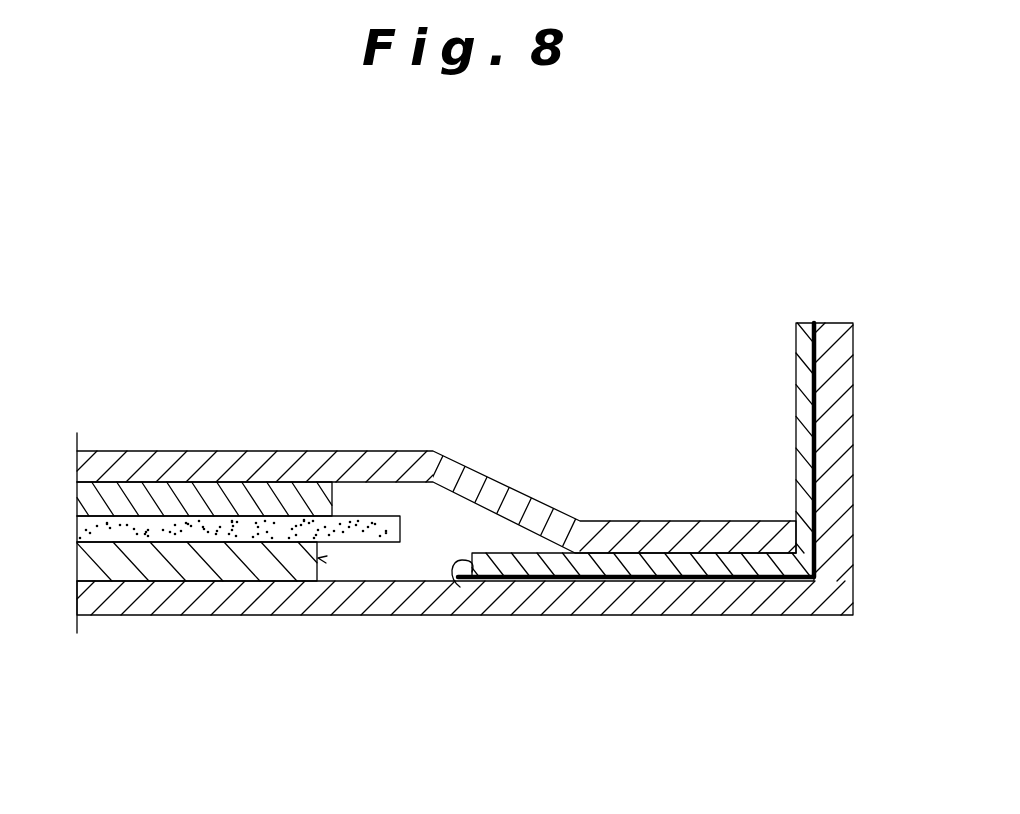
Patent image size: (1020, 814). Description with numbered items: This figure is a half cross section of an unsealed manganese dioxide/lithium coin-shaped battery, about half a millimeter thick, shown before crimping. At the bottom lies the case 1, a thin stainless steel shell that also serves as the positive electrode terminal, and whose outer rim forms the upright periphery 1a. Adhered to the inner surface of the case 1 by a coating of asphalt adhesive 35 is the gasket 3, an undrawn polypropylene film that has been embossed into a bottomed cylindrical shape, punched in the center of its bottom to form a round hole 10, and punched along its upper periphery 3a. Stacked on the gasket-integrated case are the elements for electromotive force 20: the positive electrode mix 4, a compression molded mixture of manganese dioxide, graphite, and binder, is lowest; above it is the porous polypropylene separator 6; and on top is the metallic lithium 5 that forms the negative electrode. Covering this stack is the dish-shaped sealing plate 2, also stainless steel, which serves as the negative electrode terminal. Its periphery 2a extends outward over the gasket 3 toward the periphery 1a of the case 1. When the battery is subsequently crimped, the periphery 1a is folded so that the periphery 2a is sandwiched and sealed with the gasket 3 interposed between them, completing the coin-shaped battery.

The case 1 is at (205, 607).
The periphery of the case 1a is at (830, 377).
The sealing plate 2 is at (393, 468).
The periphery of the sealing plate 2a is at (723, 538).
The gasket 3 is at (760, 567).
The upper periphery of the gasket 3a is at (802, 340).
The positive electrode mix 4 is at (273, 570).
The metallic lithium 5 is at (245, 487).
The separator 6 is at (373, 527).
The round hole 10 is at (460, 587).
The elements for electromotive force 20 is at (318, 558).
The asphalt adhesive 35 is at (695, 578).